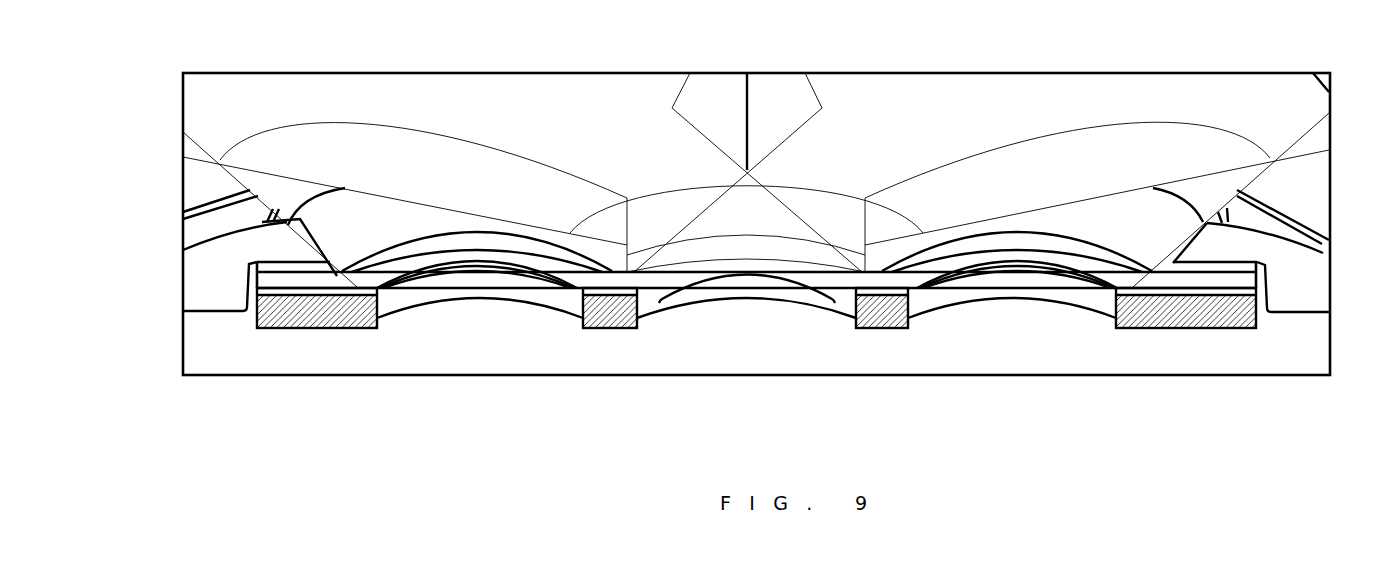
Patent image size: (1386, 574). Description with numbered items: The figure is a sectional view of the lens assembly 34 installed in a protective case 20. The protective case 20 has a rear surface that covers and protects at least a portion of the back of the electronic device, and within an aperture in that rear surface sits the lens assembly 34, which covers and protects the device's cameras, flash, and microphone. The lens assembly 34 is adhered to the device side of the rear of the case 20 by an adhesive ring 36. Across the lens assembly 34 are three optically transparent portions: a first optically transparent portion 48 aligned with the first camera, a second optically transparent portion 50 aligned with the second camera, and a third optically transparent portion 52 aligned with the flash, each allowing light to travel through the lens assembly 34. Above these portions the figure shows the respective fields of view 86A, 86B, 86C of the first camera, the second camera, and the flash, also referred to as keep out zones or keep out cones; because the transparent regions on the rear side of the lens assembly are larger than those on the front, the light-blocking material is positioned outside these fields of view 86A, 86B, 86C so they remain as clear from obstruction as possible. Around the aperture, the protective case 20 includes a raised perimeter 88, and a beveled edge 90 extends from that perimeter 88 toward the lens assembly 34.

The protective case 20 is at (1320, 290).
The lens assembly 34 is at (885, 327).
The adhesive ring 36 is at (262, 268).
The first optically transparent portion 48 is at (460, 283).
The second optically transparent portion 50 is at (993, 286).
The third optically transparent portion 52 is at (714, 281).
The field of view 86A is at (378, 216).
The field of view 86B is at (1003, 232).
The field of view 86C is at (757, 220).
The raised perimeter 88 is at (197, 237).
The beveled edge 90 is at (337, 276).